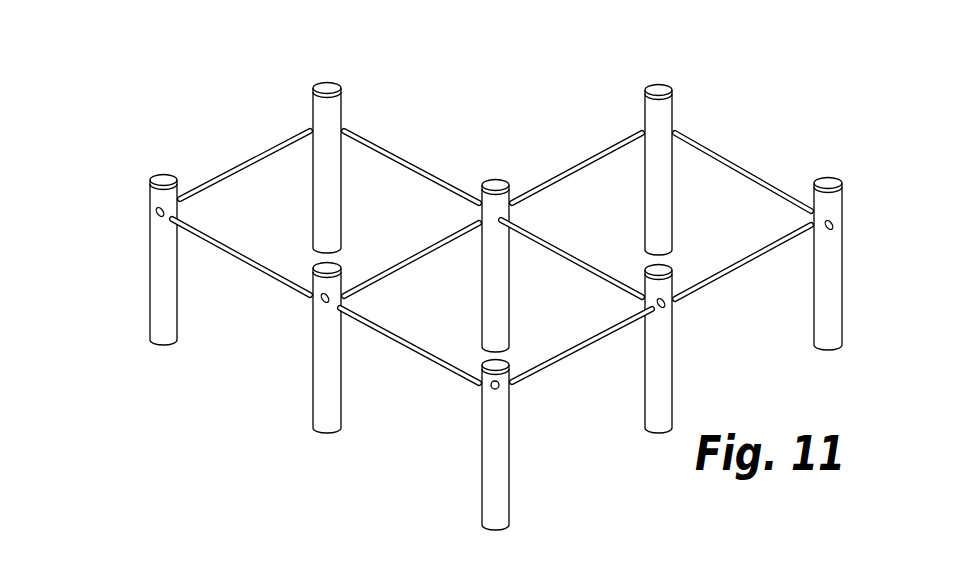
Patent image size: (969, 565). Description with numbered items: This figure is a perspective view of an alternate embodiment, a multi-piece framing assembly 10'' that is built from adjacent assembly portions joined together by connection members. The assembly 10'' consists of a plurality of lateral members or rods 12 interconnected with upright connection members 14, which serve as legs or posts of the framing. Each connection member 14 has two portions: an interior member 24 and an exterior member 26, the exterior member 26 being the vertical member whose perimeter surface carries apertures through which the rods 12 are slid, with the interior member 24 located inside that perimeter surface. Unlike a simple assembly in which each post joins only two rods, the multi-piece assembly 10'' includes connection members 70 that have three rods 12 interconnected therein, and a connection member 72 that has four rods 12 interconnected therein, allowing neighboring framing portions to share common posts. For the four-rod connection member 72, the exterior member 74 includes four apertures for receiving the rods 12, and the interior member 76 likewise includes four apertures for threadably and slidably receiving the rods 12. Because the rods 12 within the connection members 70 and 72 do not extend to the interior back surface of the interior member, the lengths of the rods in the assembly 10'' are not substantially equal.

The multi-piece framing assembly 10'' is at (115, 48).
The rods 12 is at (389, 152).
The connection members 14 is at (352, 82).
The interior member 24 is at (327, 80).
The exterior member 26 is at (343, 190).
The connection members 70 is at (293, 327).
The connection member 72 is at (452, 255).
The exterior member 74 is at (510, 300).
The interior member 76 is at (492, 178).